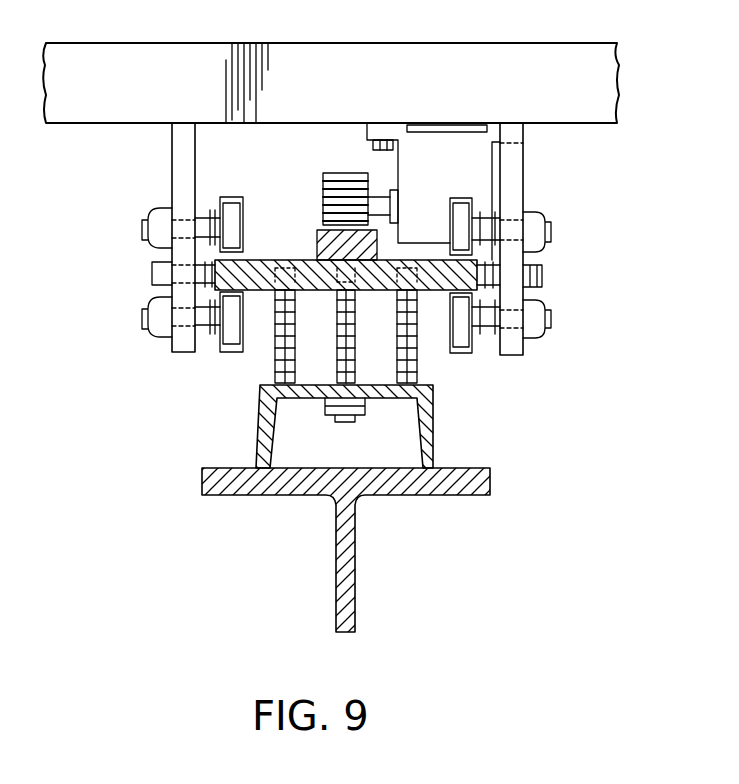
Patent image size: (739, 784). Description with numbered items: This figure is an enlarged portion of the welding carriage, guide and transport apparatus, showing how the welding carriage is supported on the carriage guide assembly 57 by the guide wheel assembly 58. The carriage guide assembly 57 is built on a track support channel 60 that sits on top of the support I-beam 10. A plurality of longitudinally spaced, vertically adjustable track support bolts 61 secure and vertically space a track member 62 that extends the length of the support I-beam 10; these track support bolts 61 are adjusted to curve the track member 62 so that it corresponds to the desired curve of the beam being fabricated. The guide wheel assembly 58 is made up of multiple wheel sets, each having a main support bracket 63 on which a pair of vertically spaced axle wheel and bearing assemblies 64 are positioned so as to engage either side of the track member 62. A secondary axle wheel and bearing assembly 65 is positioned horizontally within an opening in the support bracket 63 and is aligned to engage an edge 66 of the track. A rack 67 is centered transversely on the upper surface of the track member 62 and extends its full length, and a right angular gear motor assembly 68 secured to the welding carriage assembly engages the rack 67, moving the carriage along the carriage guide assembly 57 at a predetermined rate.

The support I-beam 10 is at (490, 480).
The carriage guide assembly 57 is at (428, 361).
The guide wheel assembly 58 is at (540, 194).
The track support channel 60 is at (433, 447).
The track support bolts 61 is at (275, 362).
The track member 62 is at (252, 258).
The main support bracket 63 is at (513, 172).
The axle wheel and bearing assemblies 64 is at (552, 230).
The secondary axle wheel and bearing assembly 65 is at (545, 280).
The edge 66 is at (482, 292).
The rack 67 is at (320, 252).
The right angular gear motor assembly 68 is at (410, 163).